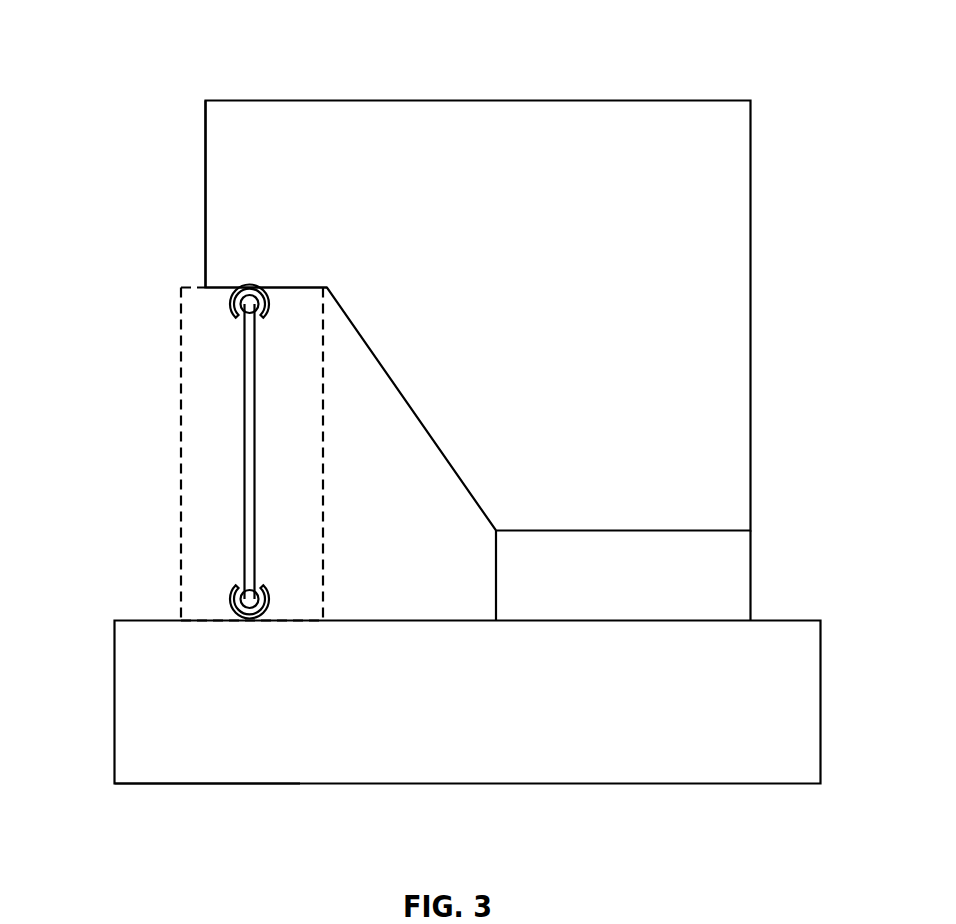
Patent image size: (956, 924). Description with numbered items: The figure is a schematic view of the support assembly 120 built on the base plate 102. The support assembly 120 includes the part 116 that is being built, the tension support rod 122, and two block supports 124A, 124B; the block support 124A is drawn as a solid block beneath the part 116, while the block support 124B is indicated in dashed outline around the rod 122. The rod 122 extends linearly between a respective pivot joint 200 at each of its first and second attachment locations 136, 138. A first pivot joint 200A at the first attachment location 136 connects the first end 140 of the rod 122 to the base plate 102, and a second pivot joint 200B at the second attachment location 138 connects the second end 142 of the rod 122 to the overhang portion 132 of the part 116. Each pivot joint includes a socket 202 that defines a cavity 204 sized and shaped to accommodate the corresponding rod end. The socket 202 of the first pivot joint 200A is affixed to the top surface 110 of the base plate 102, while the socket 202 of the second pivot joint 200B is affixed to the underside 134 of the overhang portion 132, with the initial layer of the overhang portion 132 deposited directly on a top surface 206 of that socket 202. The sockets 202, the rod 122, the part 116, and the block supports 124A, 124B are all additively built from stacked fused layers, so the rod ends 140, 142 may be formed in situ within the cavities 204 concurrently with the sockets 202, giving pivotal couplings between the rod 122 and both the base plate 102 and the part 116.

The support assembly 120 is at (117, 118).
The overhang portion 132 is at (260, 164).
The cavity 204 is at (265, 290).
The top surface of the socket 206 is at (252, 283).
The underside 134 is at (216, 291).
The part 116 is at (735, 240).
The socket 202 is at (232, 308).
The second end of the rod 142 is at (228, 313).
The tension support rod 122 is at (253, 437).
The second attachment location 138 is at (275, 307).
The second pivot joint 200B is at (268, 331).
The block support 124B is at (177, 480).
The pivot joint 200 is at (273, 558).
The first pivot joint 200A is at (275, 582).
The first end of the rod 140 is at (236, 590).
The first attachment location 136 is at (277, 602).
The block support 124A is at (737, 567).
The top surface of the base plate 110 is at (132, 620).
The base plate 102 is at (167, 770).